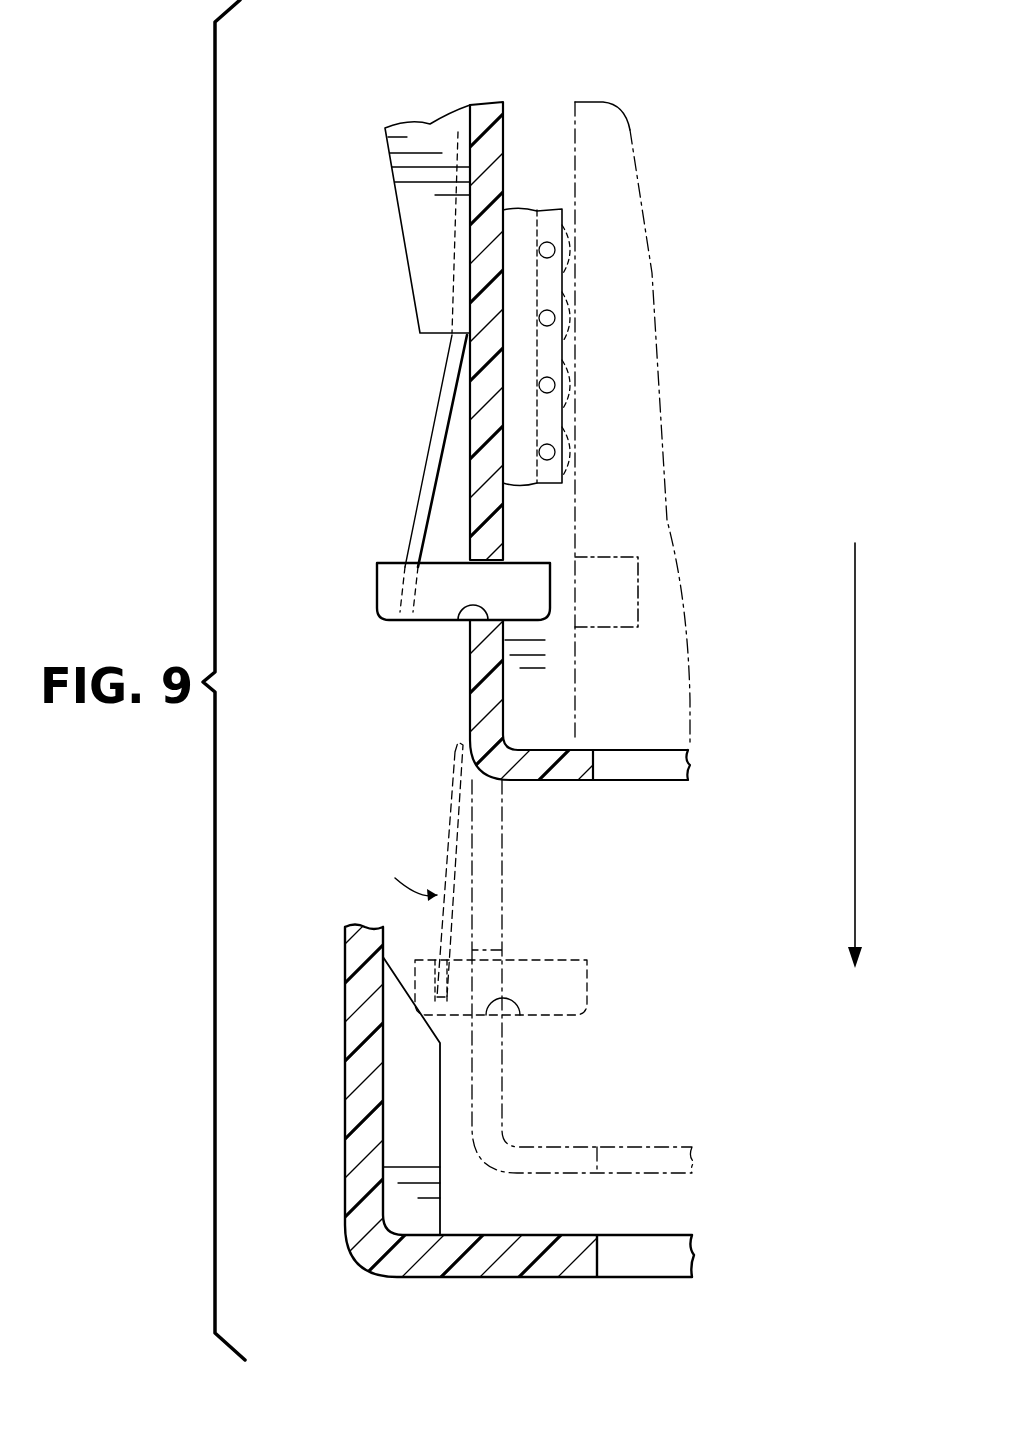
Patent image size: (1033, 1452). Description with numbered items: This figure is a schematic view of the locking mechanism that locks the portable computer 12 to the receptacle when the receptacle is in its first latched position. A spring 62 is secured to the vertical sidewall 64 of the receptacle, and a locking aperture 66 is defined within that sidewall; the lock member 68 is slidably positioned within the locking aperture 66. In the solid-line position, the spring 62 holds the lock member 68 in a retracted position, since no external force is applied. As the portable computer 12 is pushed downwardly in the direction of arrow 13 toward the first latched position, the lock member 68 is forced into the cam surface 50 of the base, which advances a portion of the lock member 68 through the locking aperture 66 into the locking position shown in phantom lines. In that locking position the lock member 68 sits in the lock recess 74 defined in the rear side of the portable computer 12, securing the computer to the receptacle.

The portable computer 12 is at (625, 223).
The arrow 13 is at (855, 797).
The cam surface 50 is at (400, 1117).
The spring 62 is at (427, 450).
The vertical sidewall 64 is at (486, 112).
The locking aperture 66 is at (457, 613).
The lock member 68 is at (377, 582).
The lock recess 74 is at (638, 608).